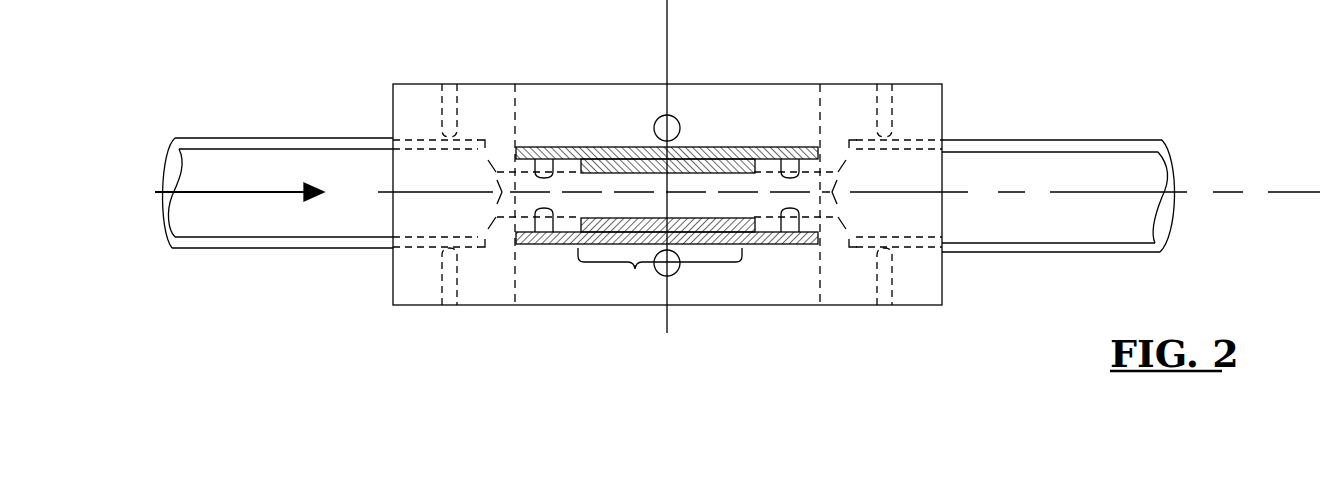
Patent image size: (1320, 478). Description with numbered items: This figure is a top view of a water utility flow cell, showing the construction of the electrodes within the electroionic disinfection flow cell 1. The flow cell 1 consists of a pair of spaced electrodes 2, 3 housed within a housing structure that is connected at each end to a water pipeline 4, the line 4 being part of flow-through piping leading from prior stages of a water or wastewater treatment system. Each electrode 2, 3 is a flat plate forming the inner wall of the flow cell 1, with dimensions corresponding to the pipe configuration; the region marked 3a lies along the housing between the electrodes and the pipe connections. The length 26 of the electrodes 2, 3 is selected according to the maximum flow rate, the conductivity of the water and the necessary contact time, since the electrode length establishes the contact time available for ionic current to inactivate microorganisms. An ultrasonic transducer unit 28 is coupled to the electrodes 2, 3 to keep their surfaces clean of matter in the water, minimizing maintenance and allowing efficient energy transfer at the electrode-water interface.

The electroionic disinfection flow cell 1 is at (789, 312).
The electrode 2 is at (751, 139).
The electrode 3 is at (742, 252).
The insulating partition 3a is at (505, 305).
The water pipeline 4 is at (298, 138).
The length of the electrodes 26 is at (660, 275).
The ultrasonic transducer unit 28 is at (590, 148).